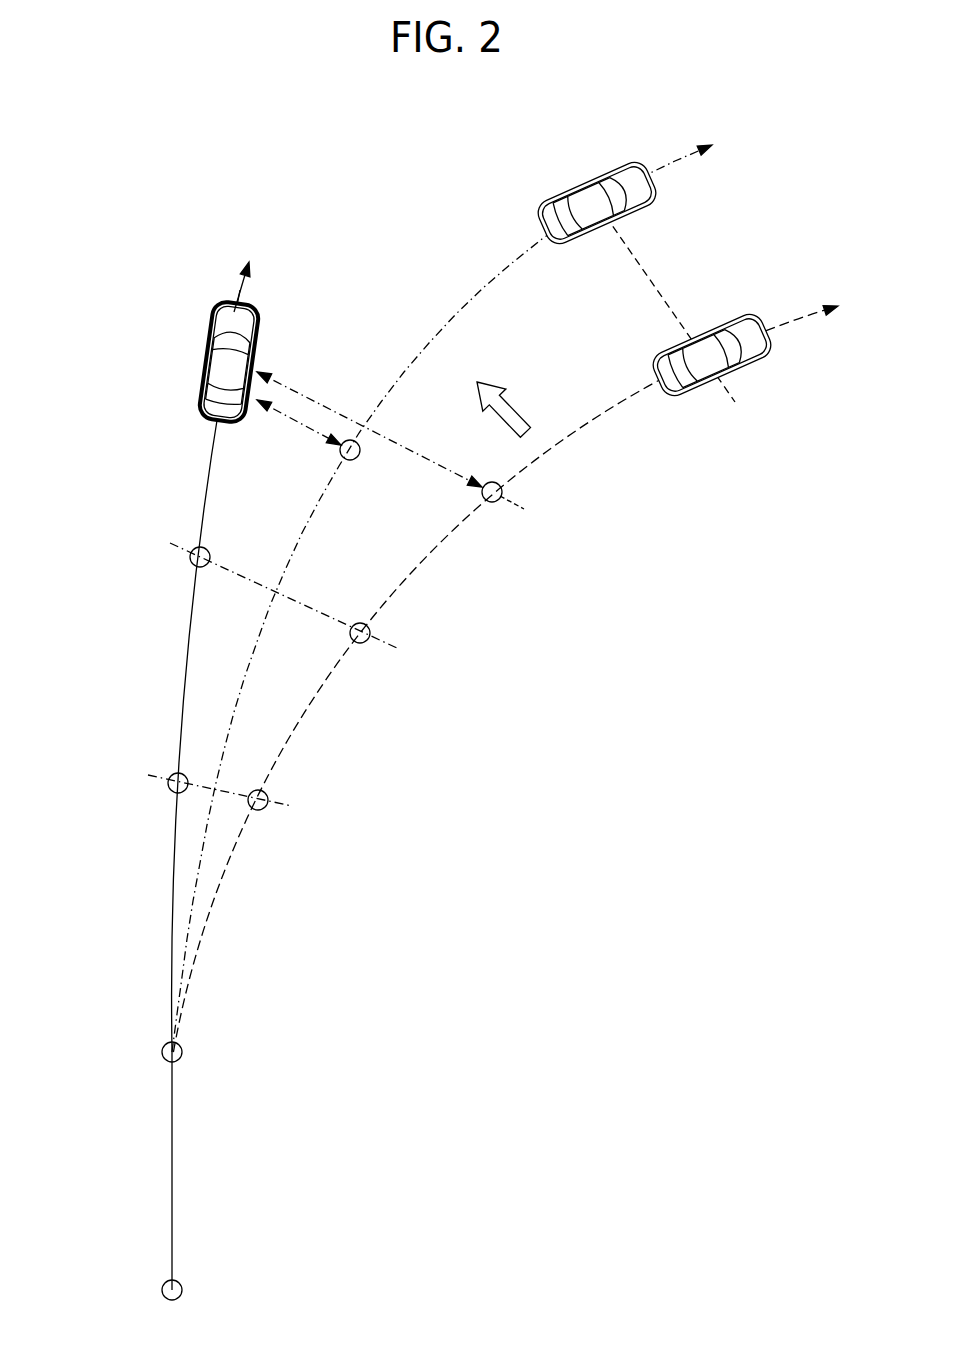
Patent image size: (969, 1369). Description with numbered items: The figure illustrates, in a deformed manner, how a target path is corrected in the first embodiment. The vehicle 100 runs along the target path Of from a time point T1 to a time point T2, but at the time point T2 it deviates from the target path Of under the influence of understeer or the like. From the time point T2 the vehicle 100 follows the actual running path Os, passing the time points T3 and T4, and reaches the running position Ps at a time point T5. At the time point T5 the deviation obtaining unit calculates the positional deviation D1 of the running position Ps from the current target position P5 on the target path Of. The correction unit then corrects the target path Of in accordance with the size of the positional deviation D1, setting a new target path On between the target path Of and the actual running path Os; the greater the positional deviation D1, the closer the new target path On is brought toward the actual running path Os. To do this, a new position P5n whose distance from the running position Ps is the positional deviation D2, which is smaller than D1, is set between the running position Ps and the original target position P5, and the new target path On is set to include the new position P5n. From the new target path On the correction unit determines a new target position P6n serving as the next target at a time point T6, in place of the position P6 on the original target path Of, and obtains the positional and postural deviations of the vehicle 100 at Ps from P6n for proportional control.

The vehicle 100 is at (208, 362).
The running position Ps is at (213, 326).
The actual running path Os is at (205, 487).
The new target path On is at (480, 283).
The target path Of is at (420, 572).
The positional deviation D1 is at (369, 429).
The positional deviation D2 is at (299, 429).
The new position P5n is at (356, 461).
The target position P5 is at (503, 491).
The new target position P6n is at (606, 163).
The position P6 is at (721, 320).
The time point T1 is at (187, 1297).
The time point T2 is at (189, 1061).
The time point T3 is at (235, 801).
The time point T4 is at (297, 609).
The time point T5 is at (526, 516).
The time point T6 is at (677, 321).